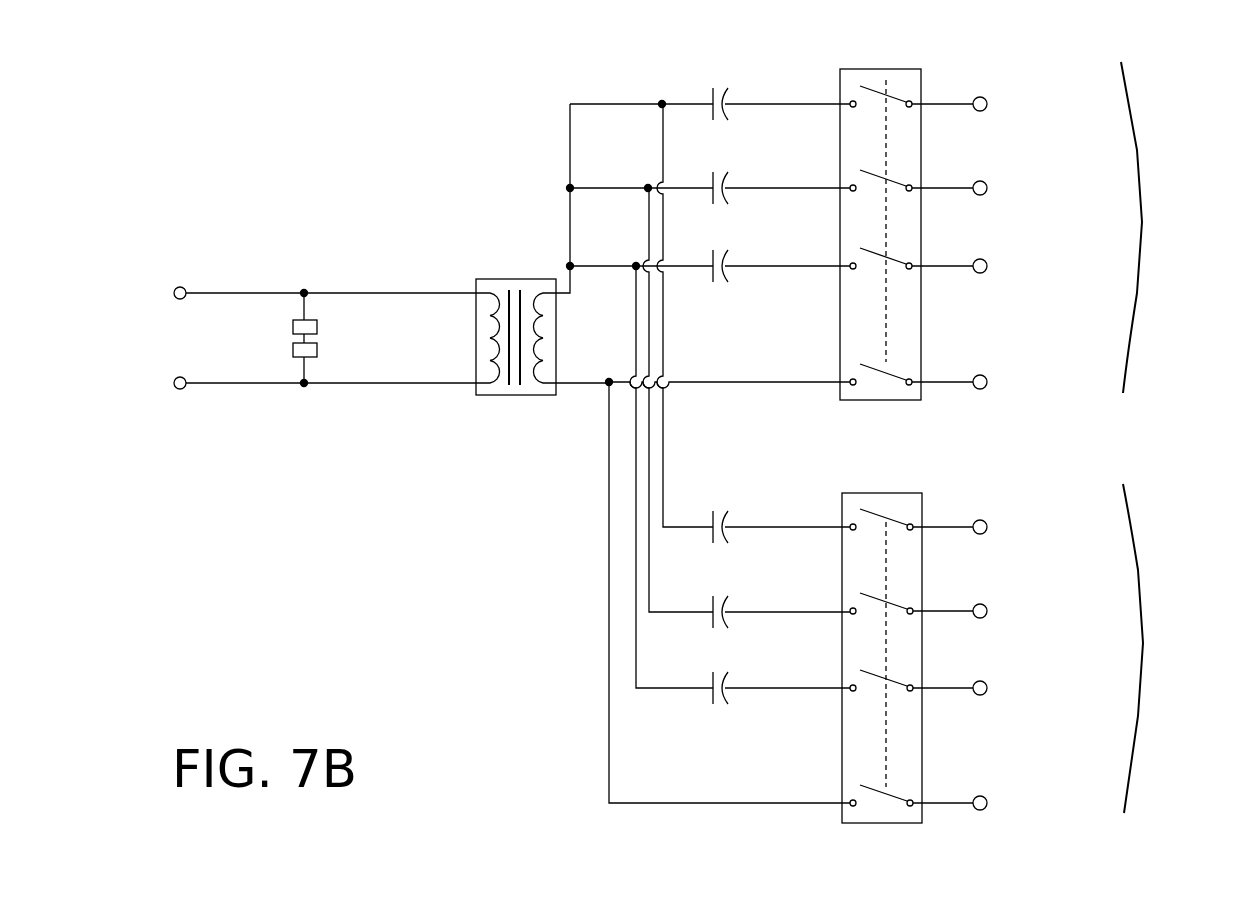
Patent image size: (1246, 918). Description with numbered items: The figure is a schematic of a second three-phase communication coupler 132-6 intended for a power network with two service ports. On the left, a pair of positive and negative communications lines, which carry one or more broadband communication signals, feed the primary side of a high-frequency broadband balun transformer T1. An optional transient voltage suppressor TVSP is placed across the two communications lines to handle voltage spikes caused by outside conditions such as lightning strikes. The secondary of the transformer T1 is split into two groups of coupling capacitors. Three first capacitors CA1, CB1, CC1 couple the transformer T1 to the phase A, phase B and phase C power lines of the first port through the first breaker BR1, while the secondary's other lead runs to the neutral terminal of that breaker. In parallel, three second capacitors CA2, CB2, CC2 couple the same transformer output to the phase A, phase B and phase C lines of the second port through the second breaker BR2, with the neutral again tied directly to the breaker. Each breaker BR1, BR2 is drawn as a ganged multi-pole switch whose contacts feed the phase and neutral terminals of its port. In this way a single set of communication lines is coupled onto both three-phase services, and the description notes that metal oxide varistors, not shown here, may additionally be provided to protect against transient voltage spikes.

The communication coupler 132-6 is at (303, 136).
The transformer T1 is at (516, 324).
The transient voltage suppressor TVSP is at (275, 338).
The first capacitor CA1 is at (777, 91).
The first capacitor CB1 is at (777, 174).
The first capacitor CC1 is at (777, 253).
The second capacitor CA2 is at (777, 513).
The second capacitor CB2 is at (777, 599).
The second capacitor CC2 is at (777, 675).
The breaker BR1 is at (880, 254).
The breaker BR2 is at (882, 677).